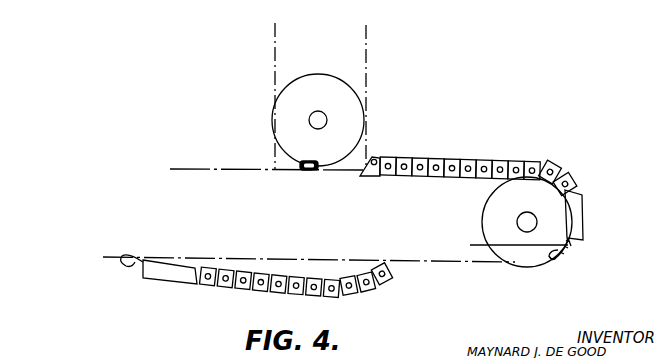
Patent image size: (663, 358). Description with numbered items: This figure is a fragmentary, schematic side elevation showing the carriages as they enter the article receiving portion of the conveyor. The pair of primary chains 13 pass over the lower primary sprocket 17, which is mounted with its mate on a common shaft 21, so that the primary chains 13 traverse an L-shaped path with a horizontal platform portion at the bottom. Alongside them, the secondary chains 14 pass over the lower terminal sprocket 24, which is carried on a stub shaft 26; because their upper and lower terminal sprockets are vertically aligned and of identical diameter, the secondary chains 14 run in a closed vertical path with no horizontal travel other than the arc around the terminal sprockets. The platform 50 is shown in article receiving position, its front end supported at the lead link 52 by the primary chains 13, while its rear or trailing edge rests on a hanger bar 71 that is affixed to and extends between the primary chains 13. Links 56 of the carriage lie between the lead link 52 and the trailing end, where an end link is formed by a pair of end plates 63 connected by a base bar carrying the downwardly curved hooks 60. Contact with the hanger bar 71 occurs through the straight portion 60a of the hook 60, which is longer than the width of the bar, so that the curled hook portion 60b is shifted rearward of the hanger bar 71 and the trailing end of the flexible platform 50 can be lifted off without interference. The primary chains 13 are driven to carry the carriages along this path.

The primary chains 13 is at (228, 138).
The secondary chains 14 is at (366, 52).
The lower primary sprocket 17 is at (490, 222).
The common shaft 21 is at (529, 214).
The lower terminal sprocket 24 is at (338, 50).
The stub shaft 26 is at (322, 116).
The platform 50 is at (250, 290).
The lead link 52 is at (367, 162).
The chain links 56 is at (478, 116).
The hook 60 is at (568, 257).
The straight portion 60a is at (572, 248).
The hook portion 60b is at (556, 262).
The end plate 63 is at (575, 206).
The hanger bar 71 is at (506, 245).